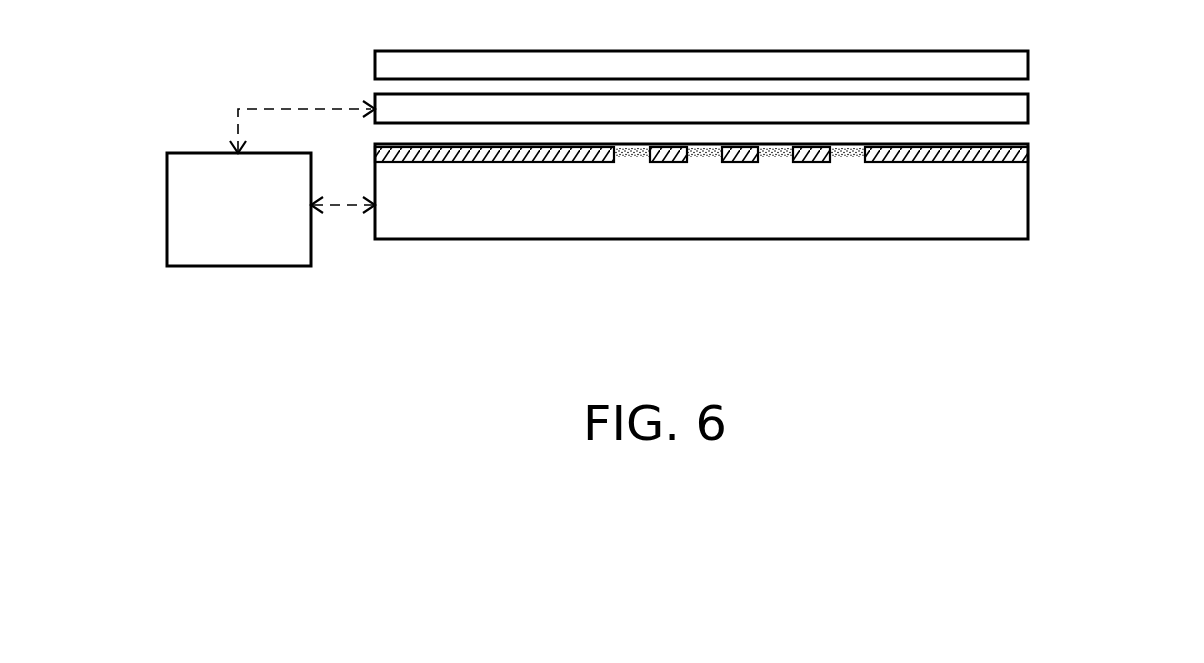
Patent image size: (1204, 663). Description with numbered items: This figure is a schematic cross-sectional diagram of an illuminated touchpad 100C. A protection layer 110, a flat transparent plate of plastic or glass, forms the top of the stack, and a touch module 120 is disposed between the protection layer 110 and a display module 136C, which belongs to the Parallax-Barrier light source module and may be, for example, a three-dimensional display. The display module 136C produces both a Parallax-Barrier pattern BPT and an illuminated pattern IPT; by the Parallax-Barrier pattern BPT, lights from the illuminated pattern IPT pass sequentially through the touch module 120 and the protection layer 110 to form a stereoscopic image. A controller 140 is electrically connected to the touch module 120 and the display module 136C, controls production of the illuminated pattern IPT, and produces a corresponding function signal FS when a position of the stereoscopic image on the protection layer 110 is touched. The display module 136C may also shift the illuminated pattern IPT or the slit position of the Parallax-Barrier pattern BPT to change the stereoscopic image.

The illuminated touchpad 100C is at (771, 200).
The protection layer 110 is at (1028, 63).
The touch module 120 is at (1028, 109).
The display module 136C is at (749, 225).
The controller 140 is at (238, 266).
The function signal FS is at (302, 111).
The illuminated pattern IPT is at (775, 169).
The Parallax-Barrier pattern BPT is at (923, 169).